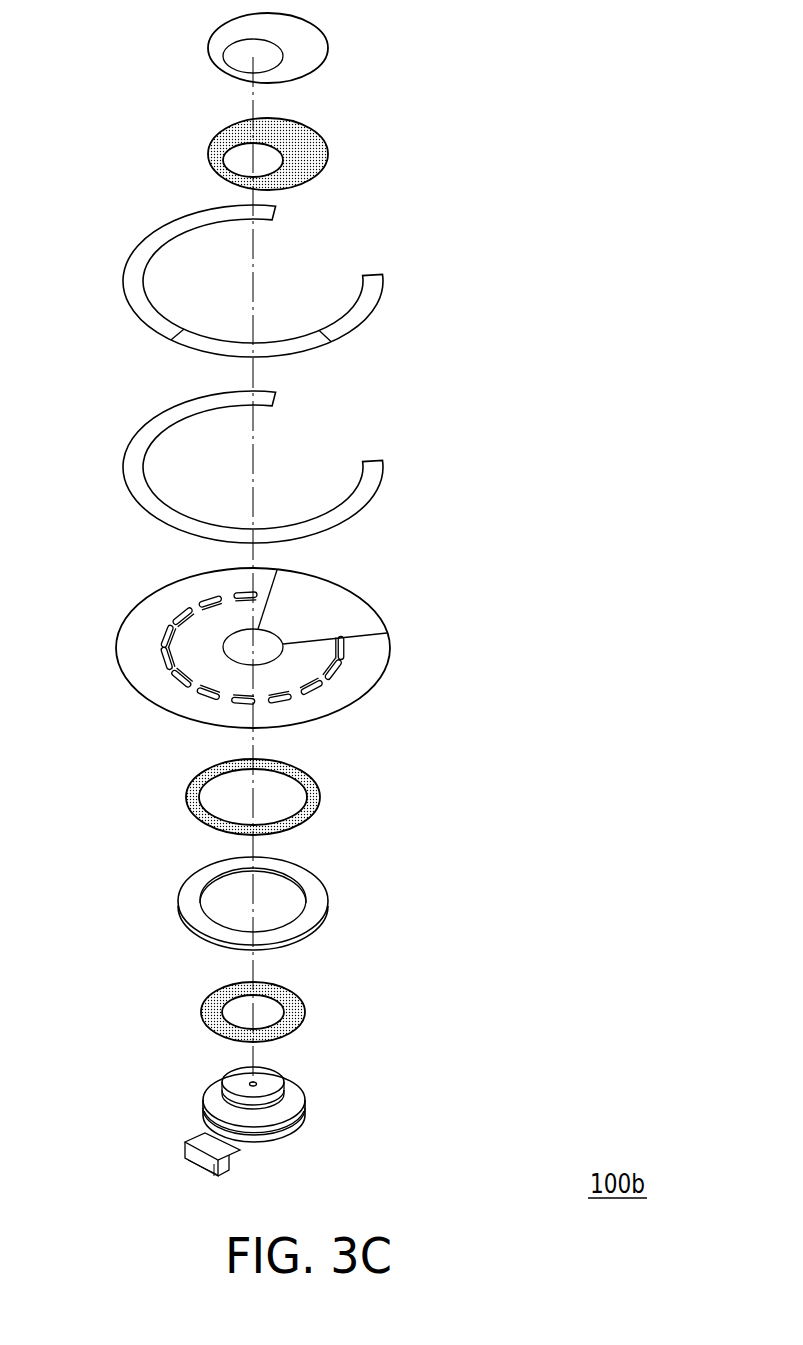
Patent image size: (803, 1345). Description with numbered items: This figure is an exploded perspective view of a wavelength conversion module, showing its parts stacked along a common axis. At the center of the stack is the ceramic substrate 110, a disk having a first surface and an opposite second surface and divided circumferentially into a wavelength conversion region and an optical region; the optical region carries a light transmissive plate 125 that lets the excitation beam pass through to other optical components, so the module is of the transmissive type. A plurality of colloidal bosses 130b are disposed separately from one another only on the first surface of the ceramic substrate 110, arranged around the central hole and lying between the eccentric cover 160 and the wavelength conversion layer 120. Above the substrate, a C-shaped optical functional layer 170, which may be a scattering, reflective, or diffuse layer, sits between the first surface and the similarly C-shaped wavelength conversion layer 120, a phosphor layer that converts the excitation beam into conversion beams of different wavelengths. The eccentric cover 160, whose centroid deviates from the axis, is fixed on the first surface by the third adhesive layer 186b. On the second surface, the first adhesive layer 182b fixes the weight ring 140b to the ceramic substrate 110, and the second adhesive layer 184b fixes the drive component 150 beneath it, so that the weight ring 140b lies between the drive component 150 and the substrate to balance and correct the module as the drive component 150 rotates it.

The eccentric cover 160 is at (313, 50).
The third adhesive layer 186b is at (313, 155).
The wavelength conversion layer 120 is at (373, 283).
The optical functional layer 170 is at (373, 469).
The ceramic substrate 110 is at (267, 647).
The light transmissive plate 125 is at (333, 607).
The colloidal bosses 130b is at (200, 598).
The first adhesive layer 182b is at (318, 799).
The weight ring 140b is at (322, 899).
The second adhesive layer 184b is at (303, 1010).
The drive component 150 is at (307, 1103).